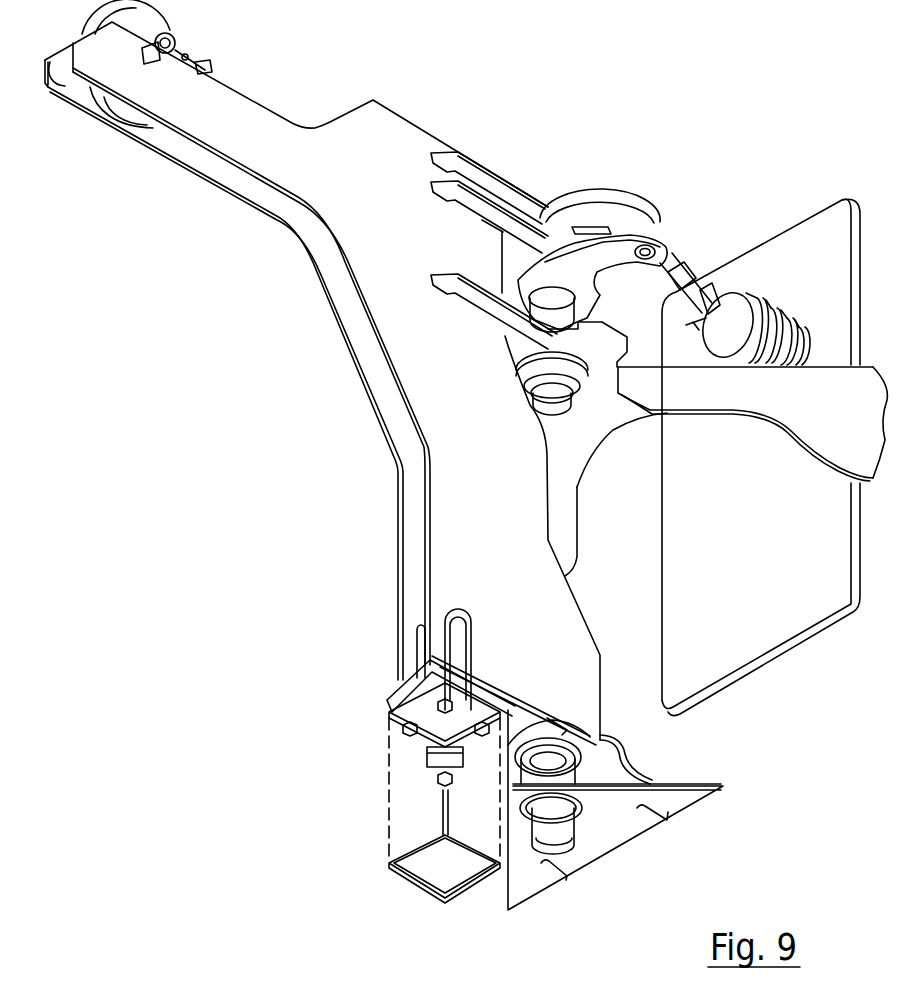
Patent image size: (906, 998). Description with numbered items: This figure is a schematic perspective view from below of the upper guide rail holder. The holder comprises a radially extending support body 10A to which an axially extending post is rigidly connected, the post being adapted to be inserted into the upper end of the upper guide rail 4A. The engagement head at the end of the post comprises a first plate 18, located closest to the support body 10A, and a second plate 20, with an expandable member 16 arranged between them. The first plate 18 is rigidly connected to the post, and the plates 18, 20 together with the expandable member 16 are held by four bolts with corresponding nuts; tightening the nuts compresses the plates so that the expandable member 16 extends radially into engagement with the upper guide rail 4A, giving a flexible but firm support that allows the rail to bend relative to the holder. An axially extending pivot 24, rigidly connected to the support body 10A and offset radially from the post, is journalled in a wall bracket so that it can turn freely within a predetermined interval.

The support body 10A is at (510, 727).
The expandable member 16 is at (400, 752).
The first plate 18 is at (405, 729).
The second plate 20 is at (402, 757).
The upper guide rail 4A is at (398, 843).
The pivot 24 is at (555, 820).